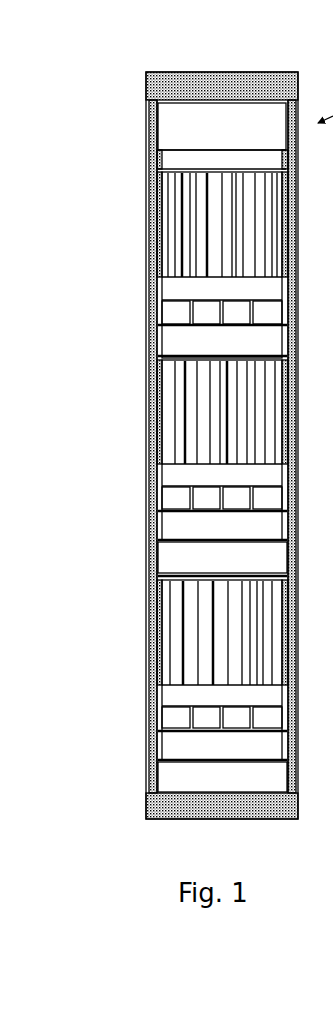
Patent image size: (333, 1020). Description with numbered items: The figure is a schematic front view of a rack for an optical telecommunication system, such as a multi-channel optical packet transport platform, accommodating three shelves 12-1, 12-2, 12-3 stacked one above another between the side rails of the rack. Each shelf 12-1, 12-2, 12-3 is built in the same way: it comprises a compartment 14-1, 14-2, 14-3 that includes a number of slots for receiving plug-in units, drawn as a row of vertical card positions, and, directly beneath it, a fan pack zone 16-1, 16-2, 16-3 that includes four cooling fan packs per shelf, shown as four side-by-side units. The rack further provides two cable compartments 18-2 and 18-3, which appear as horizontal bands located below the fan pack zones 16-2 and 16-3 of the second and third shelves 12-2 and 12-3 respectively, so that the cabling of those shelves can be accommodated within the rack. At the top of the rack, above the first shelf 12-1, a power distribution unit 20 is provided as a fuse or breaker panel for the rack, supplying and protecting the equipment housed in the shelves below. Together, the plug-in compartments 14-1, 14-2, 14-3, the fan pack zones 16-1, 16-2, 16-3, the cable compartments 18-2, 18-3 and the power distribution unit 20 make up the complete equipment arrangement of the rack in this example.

The power distribution unit 20 is at (190, 123).
The shelf 12-1 is at (159, 192).
The shelf 12-2 is at (159, 377).
The shelf 12-3 is at (159, 607).
The compartment 14-1 is at (202, 218).
The compartment 14-2 is at (183, 401).
The compartment 14-3 is at (216, 623).
The fan pack zone 16-1 is at (172, 312).
The fan pack zone 16-2 is at (175, 490).
The fan pack zone 16-3 is at (172, 716).
The cable compartment 18-2 is at (176, 552).
The cable compartment 18-3 is at (176, 773).